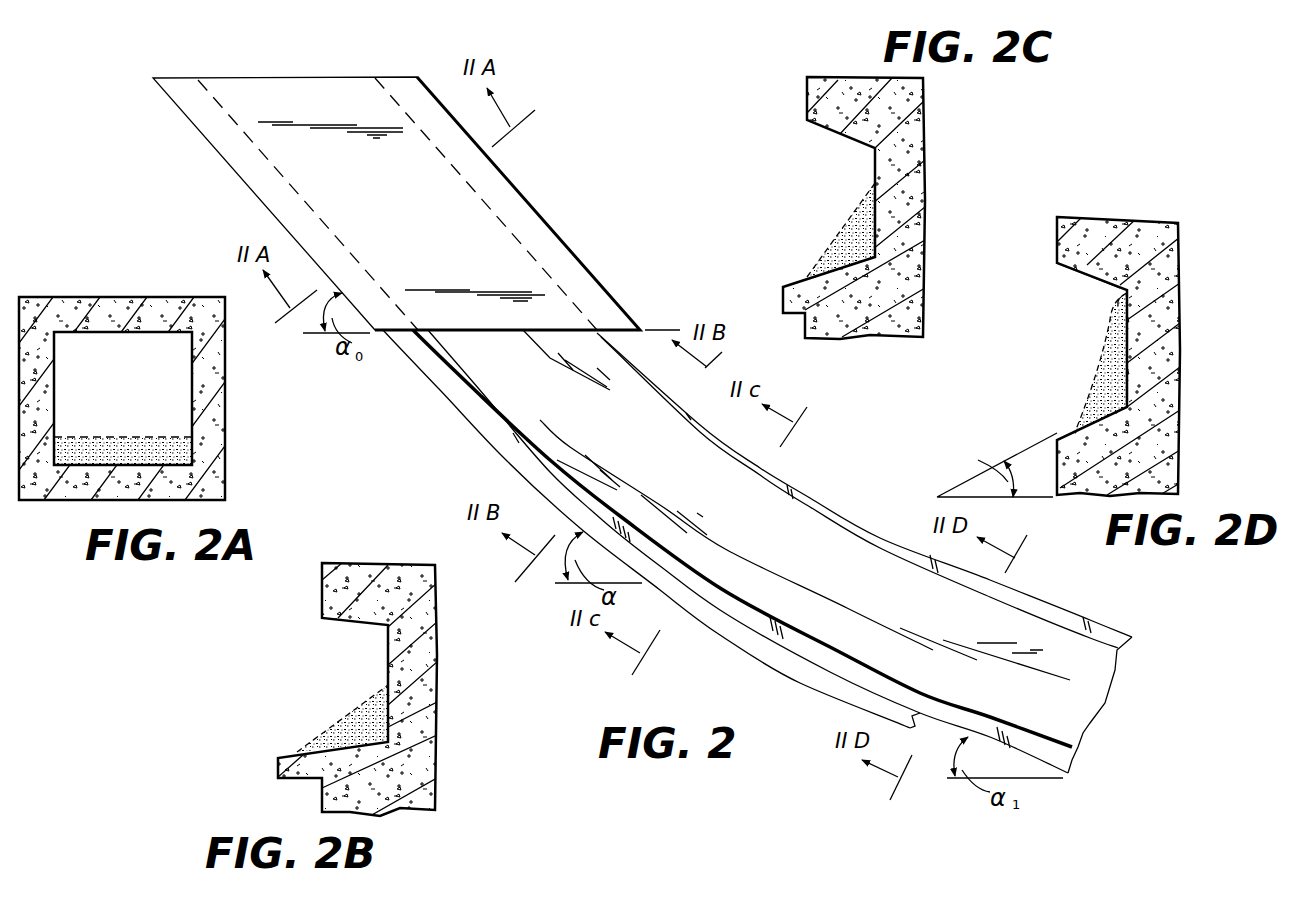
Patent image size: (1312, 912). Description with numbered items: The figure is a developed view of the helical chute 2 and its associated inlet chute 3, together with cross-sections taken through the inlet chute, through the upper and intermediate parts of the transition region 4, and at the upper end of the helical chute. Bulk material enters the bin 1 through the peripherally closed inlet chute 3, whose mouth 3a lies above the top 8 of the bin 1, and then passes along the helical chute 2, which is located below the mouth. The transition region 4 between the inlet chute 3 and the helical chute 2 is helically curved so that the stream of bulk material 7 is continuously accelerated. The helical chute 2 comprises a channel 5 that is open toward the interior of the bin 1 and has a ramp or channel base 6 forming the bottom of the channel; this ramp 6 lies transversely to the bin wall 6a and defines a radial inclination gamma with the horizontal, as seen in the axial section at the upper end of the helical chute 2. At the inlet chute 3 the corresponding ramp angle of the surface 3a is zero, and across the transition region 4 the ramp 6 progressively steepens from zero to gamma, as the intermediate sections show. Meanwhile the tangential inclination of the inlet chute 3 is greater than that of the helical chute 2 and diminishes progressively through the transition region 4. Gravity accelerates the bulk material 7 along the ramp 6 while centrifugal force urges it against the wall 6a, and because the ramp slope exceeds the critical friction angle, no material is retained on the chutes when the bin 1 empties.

In FIG. 2B, the bin 1 is at (435, 780).
In FIG. 2C, the bin 1 is at (920, 143).
In FIG. 2, the helical chute 2 is at (1016, 645).
In FIG. 2D, the helical chute 2 is at (1047, 308).
In FIG. 2, the inlet chute 3 is at (413, 226).
In FIG. 2A, the inlet chute 3 is at (75, 506).
In FIG. 2A, the mouth of the inlet chute 3a is at (168, 462).
In FIG. 2, the transition region 4 is at (618, 441).
In FIG. 2B, the transition region 4 is at (310, 697).
In FIG. 2C, the transition region 4 is at (800, 180).
In FIG. 2D, the channel 5 is at (1088, 380).
In FIG. 2D, the ramp or channel base 6 is at (1088, 413).
In FIG. 2D, the bin wall 6a is at (1137, 288).
In FIG. 2A, the stream of bulk material 7 is at (121, 442).
In FIG. 2C, the stream of bulk material 7 is at (850, 248).
In FIG. 2, the top of the bin 8 is at (658, 329).